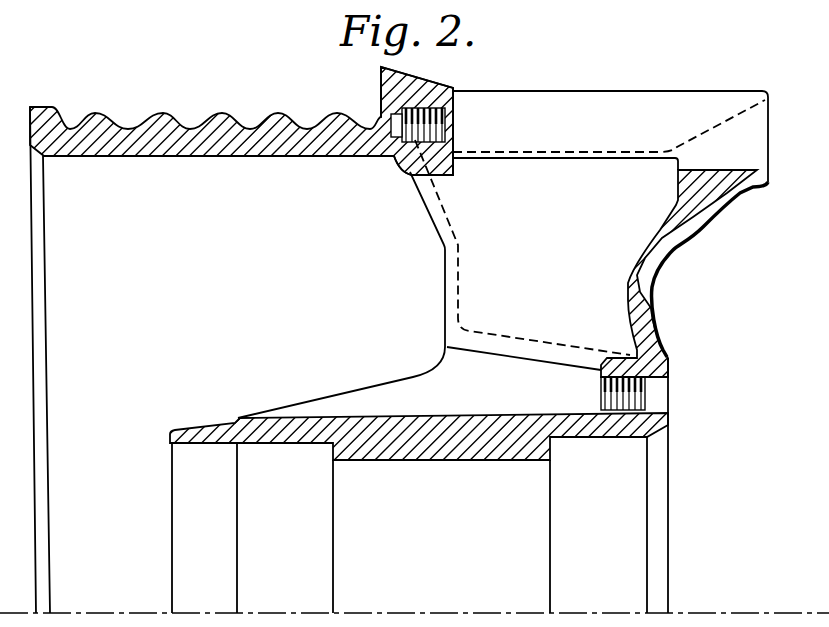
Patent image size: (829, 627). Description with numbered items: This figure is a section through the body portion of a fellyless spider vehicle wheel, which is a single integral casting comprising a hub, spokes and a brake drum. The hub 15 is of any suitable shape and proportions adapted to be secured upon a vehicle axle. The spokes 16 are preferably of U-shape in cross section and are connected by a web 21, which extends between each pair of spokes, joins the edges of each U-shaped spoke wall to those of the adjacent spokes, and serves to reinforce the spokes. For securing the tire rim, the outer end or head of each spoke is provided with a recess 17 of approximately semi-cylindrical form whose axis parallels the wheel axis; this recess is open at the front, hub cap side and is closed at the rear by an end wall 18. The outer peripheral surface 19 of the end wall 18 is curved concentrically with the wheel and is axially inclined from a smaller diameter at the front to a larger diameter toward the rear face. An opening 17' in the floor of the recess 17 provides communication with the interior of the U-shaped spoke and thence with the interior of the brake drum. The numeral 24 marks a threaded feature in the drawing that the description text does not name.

The hub 15 is at (465, 452).
The spokes 16 is at (642, 282).
The recess 17 is at (610, 119).
The opening 17' is at (609, 162).
The end wall 18 is at (442, 93).
The peripheral surface 19 is at (420, 77).
The web 21 is at (460, 307).
The threaded bore 24 is at (430, 133).